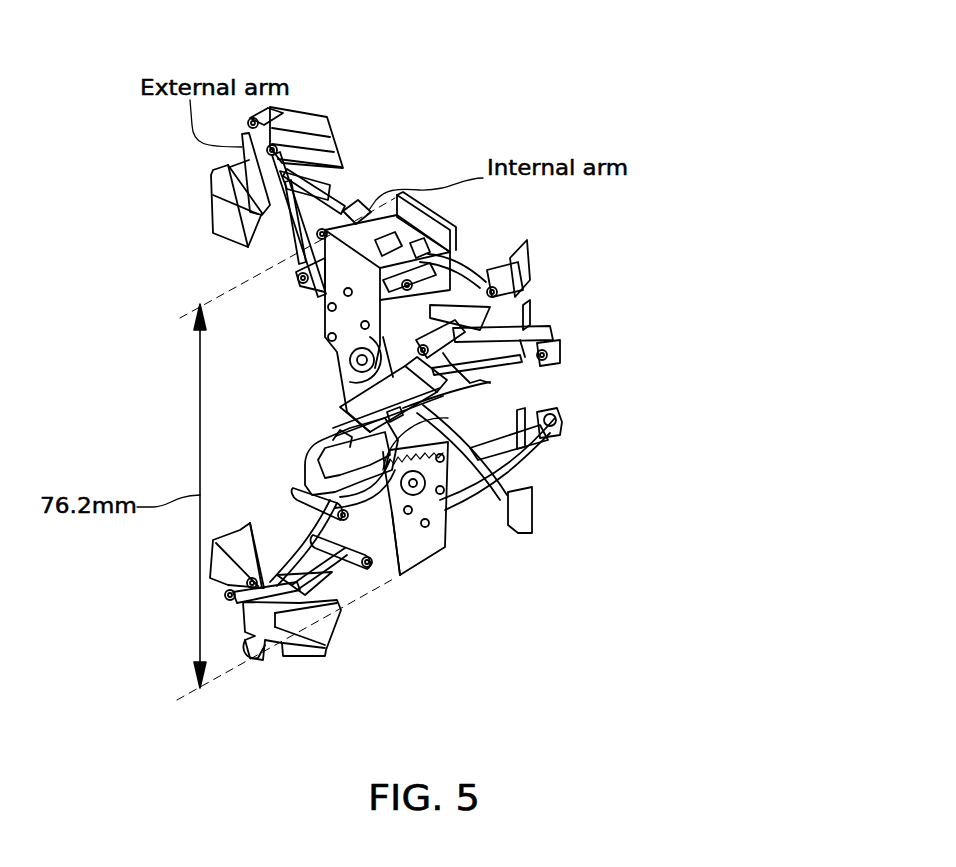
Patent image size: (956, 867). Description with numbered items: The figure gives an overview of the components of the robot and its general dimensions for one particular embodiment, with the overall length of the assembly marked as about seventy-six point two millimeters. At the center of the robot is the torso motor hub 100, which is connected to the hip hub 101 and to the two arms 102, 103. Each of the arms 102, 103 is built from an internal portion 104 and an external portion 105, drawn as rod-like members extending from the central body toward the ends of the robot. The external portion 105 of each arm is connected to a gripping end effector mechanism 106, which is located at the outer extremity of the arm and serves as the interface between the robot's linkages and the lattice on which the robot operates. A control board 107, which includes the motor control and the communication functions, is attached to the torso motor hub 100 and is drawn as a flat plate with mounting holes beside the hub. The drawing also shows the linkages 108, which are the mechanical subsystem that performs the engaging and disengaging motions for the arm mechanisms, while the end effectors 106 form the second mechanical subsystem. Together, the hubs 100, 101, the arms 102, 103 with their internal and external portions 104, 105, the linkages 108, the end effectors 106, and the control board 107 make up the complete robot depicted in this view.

The torso motor hub 100 is at (535, 433).
The hip hub 101 is at (770, 398).
The arm 102 is at (215, 197).
The arm 103 is at (342, 625).
The internal portion 104 is at (305, 464).
The external portion 105 is at (258, 652).
The gripping end effector mechanism 106 is at (548, 63).
The control board 107 is at (428, 540).
The linkages 108 is at (293, 213).